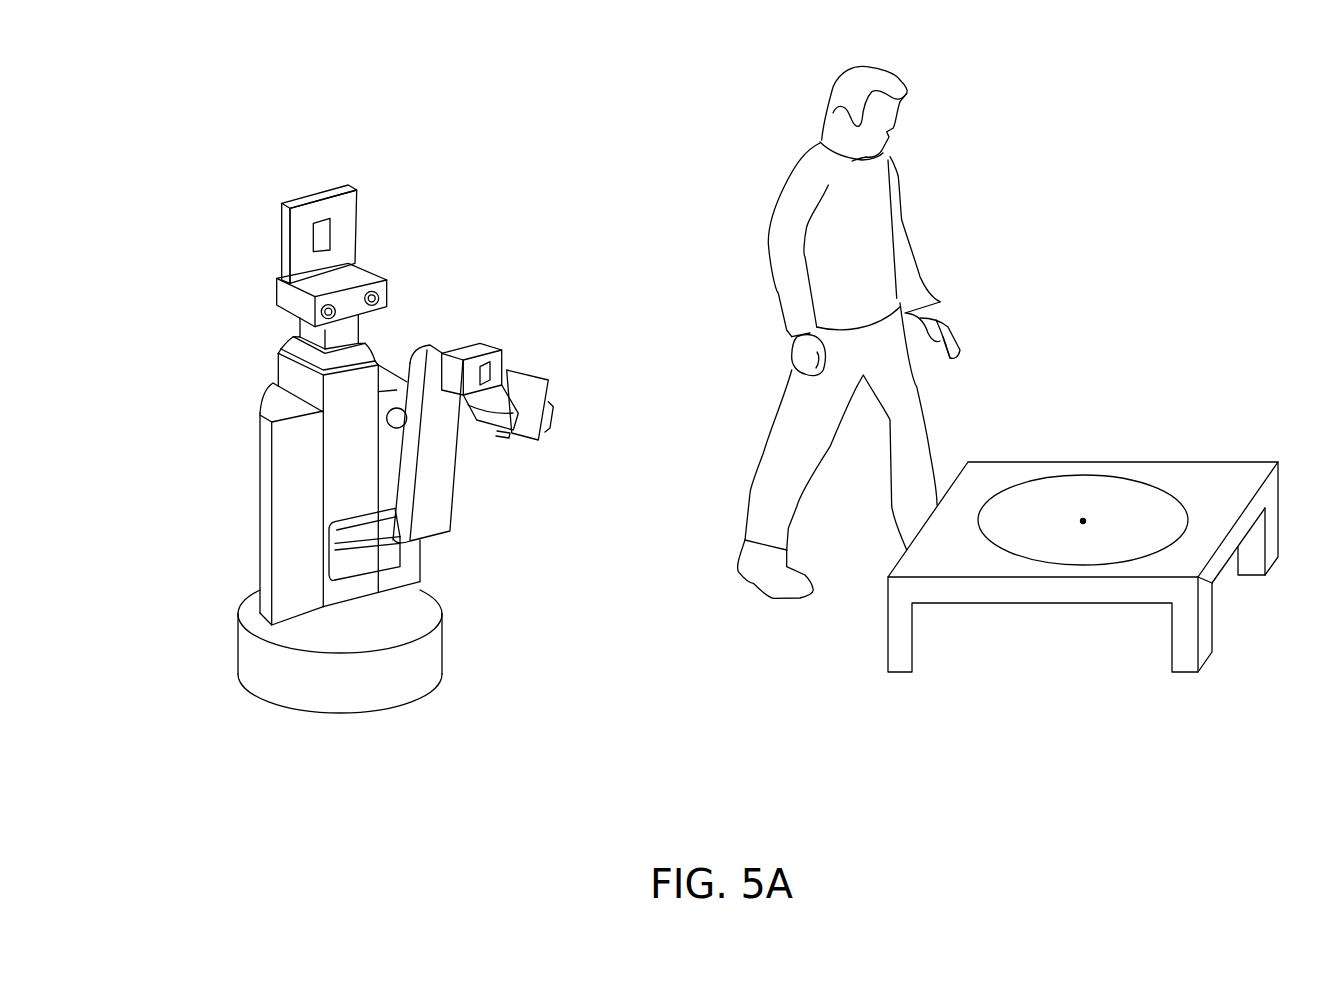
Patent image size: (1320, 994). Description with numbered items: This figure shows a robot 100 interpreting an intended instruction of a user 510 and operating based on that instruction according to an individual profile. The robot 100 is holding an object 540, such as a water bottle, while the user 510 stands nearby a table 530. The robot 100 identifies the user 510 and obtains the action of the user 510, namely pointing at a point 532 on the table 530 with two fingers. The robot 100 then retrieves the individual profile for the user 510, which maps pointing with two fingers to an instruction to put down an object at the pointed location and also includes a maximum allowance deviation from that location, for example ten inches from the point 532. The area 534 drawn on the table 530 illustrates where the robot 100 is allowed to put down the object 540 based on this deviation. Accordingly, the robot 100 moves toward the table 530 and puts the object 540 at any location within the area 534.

The robot 100 is at (193, 133).
The user 510 is at (803, 151).
The table 530 is at (1192, 462).
The point 532 is at (1081, 521).
The area 534 is at (1185, 507).
The object 540 is at (528, 368).